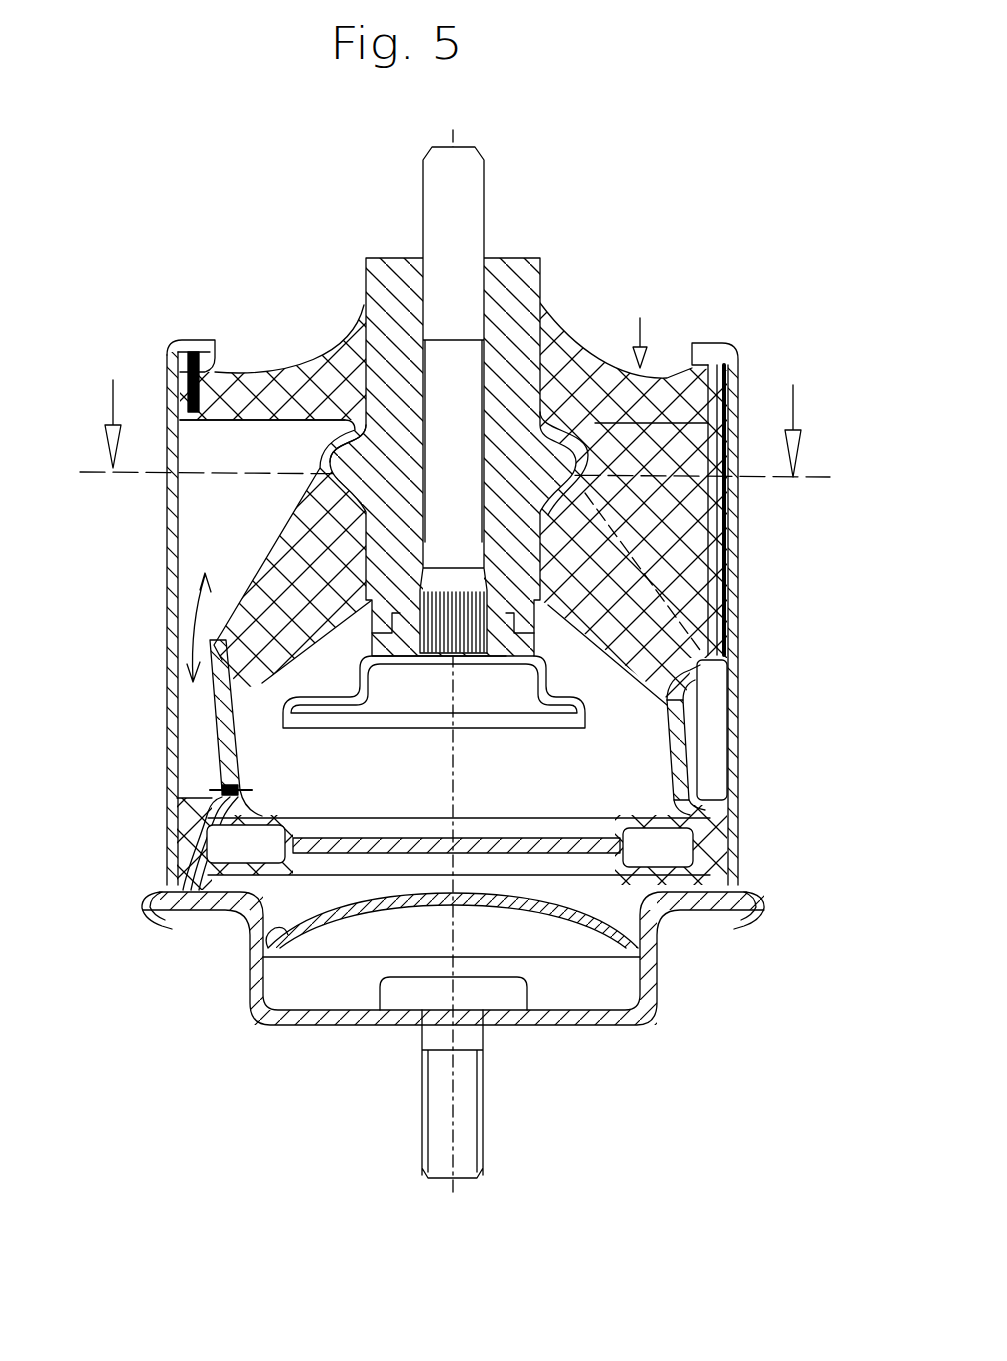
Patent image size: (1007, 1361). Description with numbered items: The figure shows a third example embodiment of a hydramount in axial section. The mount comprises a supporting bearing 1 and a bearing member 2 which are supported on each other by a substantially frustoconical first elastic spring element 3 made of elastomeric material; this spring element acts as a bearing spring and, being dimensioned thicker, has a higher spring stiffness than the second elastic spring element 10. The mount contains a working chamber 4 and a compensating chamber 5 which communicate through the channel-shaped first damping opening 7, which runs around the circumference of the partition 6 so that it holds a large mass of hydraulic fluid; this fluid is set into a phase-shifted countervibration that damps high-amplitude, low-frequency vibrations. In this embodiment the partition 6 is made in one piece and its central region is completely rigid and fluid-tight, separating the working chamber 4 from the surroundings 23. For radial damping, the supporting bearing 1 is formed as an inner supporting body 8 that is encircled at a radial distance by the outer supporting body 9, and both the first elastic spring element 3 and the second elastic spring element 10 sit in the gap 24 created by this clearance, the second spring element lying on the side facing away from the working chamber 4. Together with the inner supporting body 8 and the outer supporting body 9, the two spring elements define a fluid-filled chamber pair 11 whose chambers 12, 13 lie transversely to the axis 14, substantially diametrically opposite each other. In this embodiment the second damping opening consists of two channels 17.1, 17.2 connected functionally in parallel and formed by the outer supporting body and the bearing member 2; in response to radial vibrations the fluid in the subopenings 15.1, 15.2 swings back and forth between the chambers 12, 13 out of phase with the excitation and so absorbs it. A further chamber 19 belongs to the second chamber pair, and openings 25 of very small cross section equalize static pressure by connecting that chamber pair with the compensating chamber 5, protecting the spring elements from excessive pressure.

The supporting bearing 1 is at (508, 285).
The bearing member 2 is at (733, 691).
The first elastic spring element 3 is at (247, 637).
The working chamber 4 is at (434, 732).
The compensating chamber 5 is at (287, 928).
The partition 6 is at (523, 847).
The first damping opening 7 is at (672, 850).
The inner supporting body 8 is at (400, 503).
The outer supporting body 9 is at (176, 382).
The second elastic spring element 10 is at (258, 448).
The chamber pair 11 is at (627, 453).
The chamber 12 is at (175, 342).
The chamber 13 is at (737, 357).
The axis 14 is at (453, 200).
The subopening 15.1 is at (193, 705).
The subopening 15.2 is at (710, 707).
The channel 17.1 is at (193, 738).
The channel 17.2 is at (708, 748).
The chamber 19 is at (238, 543).
The surroundings 23 is at (742, 268).
The gap 24 is at (453, 373).
The opening 25 is at (227, 793).